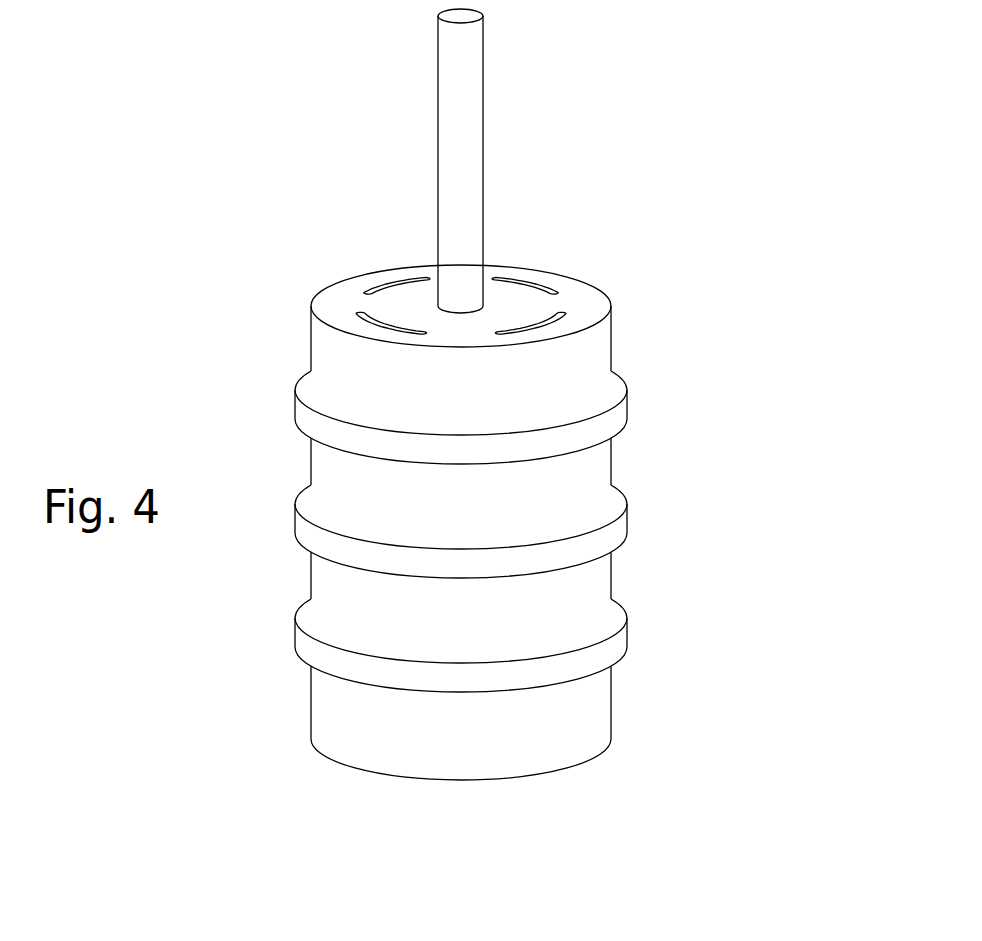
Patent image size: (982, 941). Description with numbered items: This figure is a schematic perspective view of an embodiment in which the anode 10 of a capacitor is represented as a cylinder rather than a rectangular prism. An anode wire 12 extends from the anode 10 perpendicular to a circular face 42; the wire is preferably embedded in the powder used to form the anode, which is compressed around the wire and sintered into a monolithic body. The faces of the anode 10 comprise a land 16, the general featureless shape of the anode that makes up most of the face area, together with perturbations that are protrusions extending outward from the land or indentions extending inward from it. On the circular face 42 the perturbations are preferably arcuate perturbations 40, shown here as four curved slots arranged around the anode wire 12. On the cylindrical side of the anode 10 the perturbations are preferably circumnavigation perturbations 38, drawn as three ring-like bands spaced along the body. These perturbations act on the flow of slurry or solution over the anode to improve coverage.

The anode 10 is at (655, 327).
The anode wire 12 is at (460, 85).
The land 16 is at (508, 738).
The circumnavigation perturbations 38 is at (610, 638).
The arcuate perturbations 40 is at (548, 315).
The circular face 42 is at (462, 327).